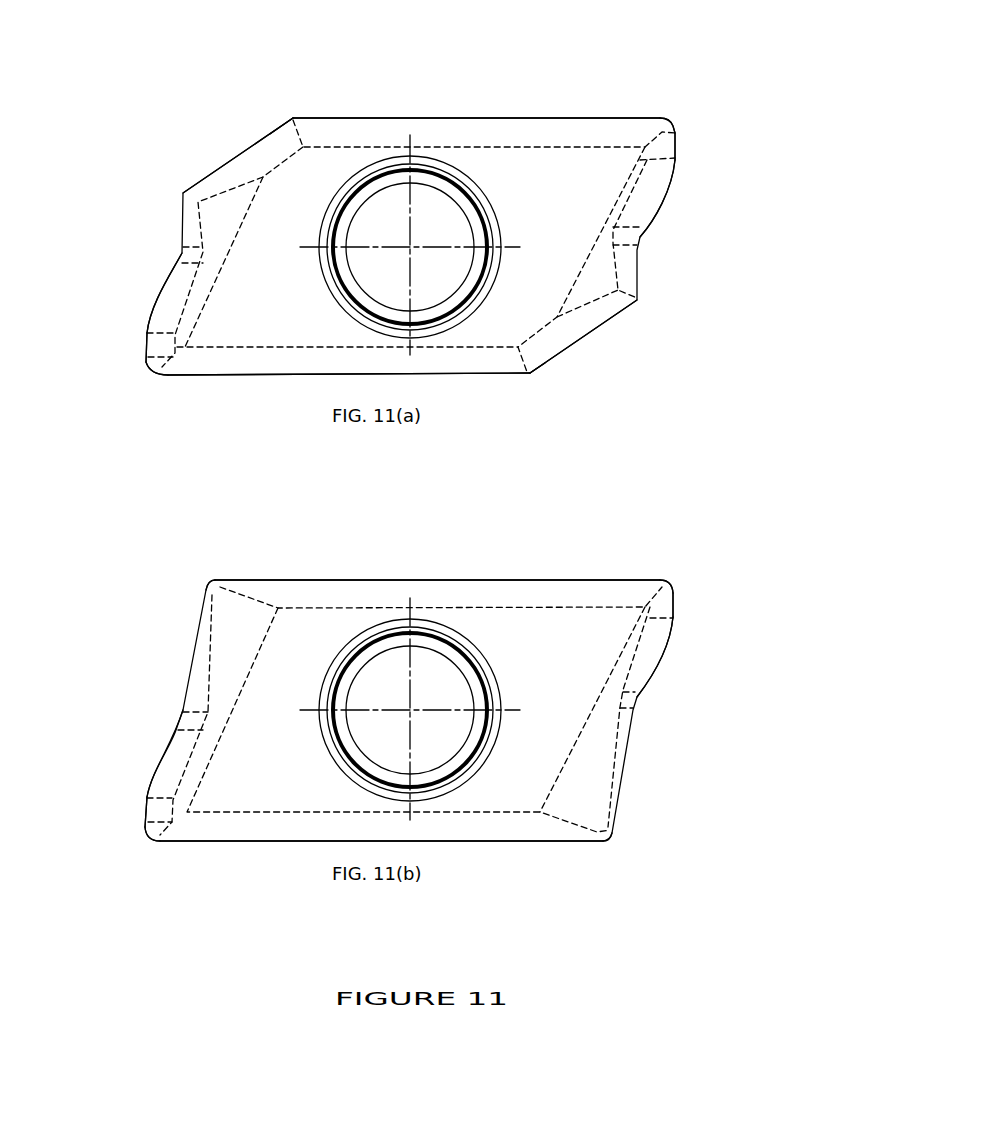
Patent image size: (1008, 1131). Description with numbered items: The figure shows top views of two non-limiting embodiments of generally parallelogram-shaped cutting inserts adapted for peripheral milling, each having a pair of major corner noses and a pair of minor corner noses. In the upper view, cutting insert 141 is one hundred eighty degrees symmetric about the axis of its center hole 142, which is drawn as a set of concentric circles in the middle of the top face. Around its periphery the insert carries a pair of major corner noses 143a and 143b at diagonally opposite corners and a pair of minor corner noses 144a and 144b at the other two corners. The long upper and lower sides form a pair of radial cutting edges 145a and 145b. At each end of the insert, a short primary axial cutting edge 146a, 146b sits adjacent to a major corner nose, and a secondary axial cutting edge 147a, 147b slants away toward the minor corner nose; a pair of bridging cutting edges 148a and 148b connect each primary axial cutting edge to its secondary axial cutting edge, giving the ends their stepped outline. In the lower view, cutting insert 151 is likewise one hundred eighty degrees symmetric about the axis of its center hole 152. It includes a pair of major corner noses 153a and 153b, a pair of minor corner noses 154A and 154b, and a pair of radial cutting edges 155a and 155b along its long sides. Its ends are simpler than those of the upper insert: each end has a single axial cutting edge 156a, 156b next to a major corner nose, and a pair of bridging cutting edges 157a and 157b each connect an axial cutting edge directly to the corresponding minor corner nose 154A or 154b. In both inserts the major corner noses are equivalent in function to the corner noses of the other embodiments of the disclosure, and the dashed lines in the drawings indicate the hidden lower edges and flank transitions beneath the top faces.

In FIG. 11A, the cutting insert 141 is at (667, 280).
In FIG. 11A, the center hole 142 is at (430, 217).
In FIG. 11A, the major corner nose 143a is at (668, 120).
In FIG. 11A, the major corner nose 143b is at (150, 372).
In FIG. 11A, the minor corner nose 144a is at (530, 377).
In FIG. 11A, the minor corner nose 144b is at (293, 118).
In FIG. 11A, the radial cutting edge 145a is at (425, 117).
In FIG. 11A, the radial cutting edge 145b is at (268, 377).
In FIG. 11A, the primary axial cutting edge 146a is at (677, 148).
In FIG. 11A, the primary axial cutting edge 146b is at (143, 347).
In FIG. 11A, the secondary axial cutting edge 147a is at (593, 333).
In FIG. 11A, the secondary axial cutting edge 147b is at (227, 163).
In FIG. 11A, the bridging cutting edge 148a is at (657, 202).
In FIG. 11A, the bridging cutting edge 148b is at (163, 292).
In FIG. 11B, the cutting insert 151 is at (657, 757).
In FIG. 11B, the center hole 152 is at (433, 680).
In FIG. 11B, the major corner nose 153a is at (670, 583).
In FIG. 11B, the major corner nose 153b is at (148, 837).
In FIG. 11B, the minor corner nose 154A is at (610, 838).
In FIG. 11B, the minor corner nose 154b is at (212, 582).
In FIG. 11B, the radial cutting edge 155a is at (390, 580).
In FIG. 11B, the radial cutting edge 155b is at (262, 842).
In FIG. 11B, the axial cutting edge 156a is at (677, 610).
In FIG. 11B, the axial cutting edge 156b is at (145, 813).
In FIG. 11B, the bridging cutting edge 157a is at (657, 660).
In FIG. 11B, the bridging cutting edge 157b is at (165, 758).